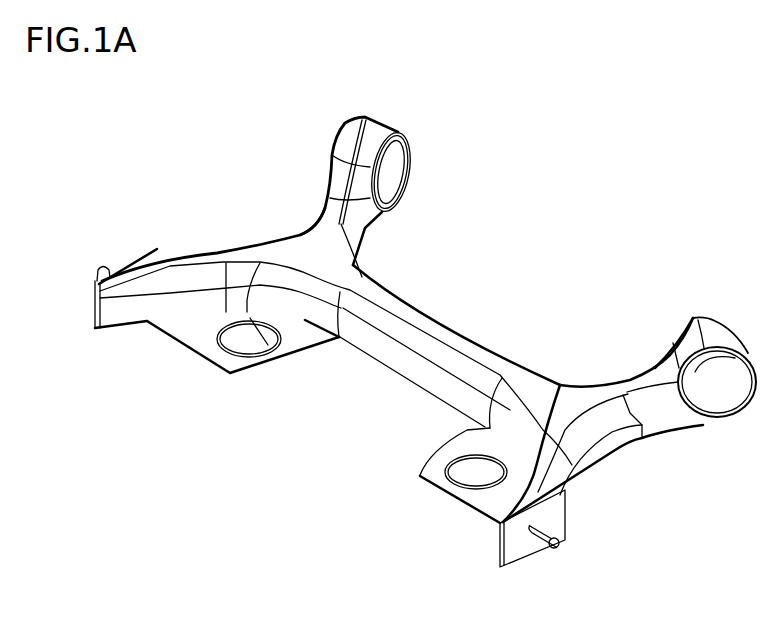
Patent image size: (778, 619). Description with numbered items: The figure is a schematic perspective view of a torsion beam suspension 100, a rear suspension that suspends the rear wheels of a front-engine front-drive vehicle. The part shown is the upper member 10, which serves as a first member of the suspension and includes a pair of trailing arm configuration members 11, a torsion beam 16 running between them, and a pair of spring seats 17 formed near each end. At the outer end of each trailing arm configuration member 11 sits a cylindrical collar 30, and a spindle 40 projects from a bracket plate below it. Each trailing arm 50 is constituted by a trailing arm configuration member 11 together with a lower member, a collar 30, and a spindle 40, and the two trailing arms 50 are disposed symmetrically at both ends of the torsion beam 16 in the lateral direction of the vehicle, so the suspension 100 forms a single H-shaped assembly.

The torsion beam suspension 100 is at (97, 98).
The upper member 10 is at (245, 460).
The trailing arm configuration member 11 is at (283, 320).
The torsion beam 16 is at (390, 363).
The spring seat 17 is at (233, 358).
The collar 30 is at (398, 170).
The spindle 40 is at (97, 297).
The trailing arm 50 is at (376, 238).